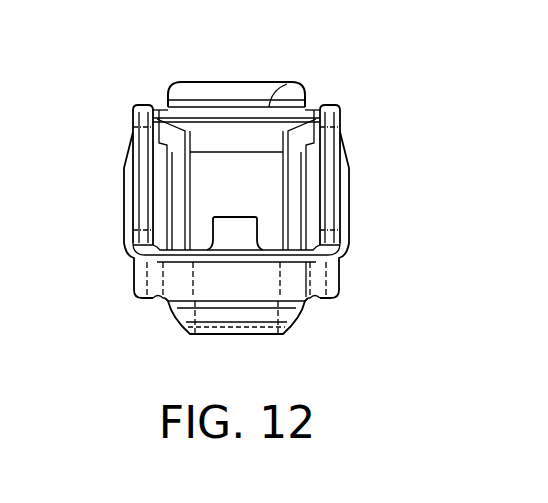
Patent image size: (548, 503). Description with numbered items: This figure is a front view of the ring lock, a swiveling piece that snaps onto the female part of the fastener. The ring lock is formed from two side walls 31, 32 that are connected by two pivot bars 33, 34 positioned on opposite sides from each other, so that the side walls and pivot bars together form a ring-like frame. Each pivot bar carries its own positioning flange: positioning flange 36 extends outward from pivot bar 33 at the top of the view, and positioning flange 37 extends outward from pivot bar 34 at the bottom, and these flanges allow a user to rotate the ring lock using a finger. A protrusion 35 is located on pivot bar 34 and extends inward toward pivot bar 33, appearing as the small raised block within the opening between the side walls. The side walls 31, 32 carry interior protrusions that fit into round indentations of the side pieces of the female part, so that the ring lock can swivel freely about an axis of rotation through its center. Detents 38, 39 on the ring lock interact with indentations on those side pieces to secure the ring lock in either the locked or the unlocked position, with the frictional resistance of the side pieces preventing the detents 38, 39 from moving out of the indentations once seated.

The side wall 31 is at (129, 214).
The side wall 32 is at (350, 197).
The pivot bar 33 is at (270, 107).
The pivot bar 34 is at (288, 288).
The protrusion 35 is at (230, 236).
The positioning flange 36 is at (238, 88).
The positioning flange 37 is at (243, 335).
The detent 38 is at (157, 247).
The detent 39 is at (288, 258).